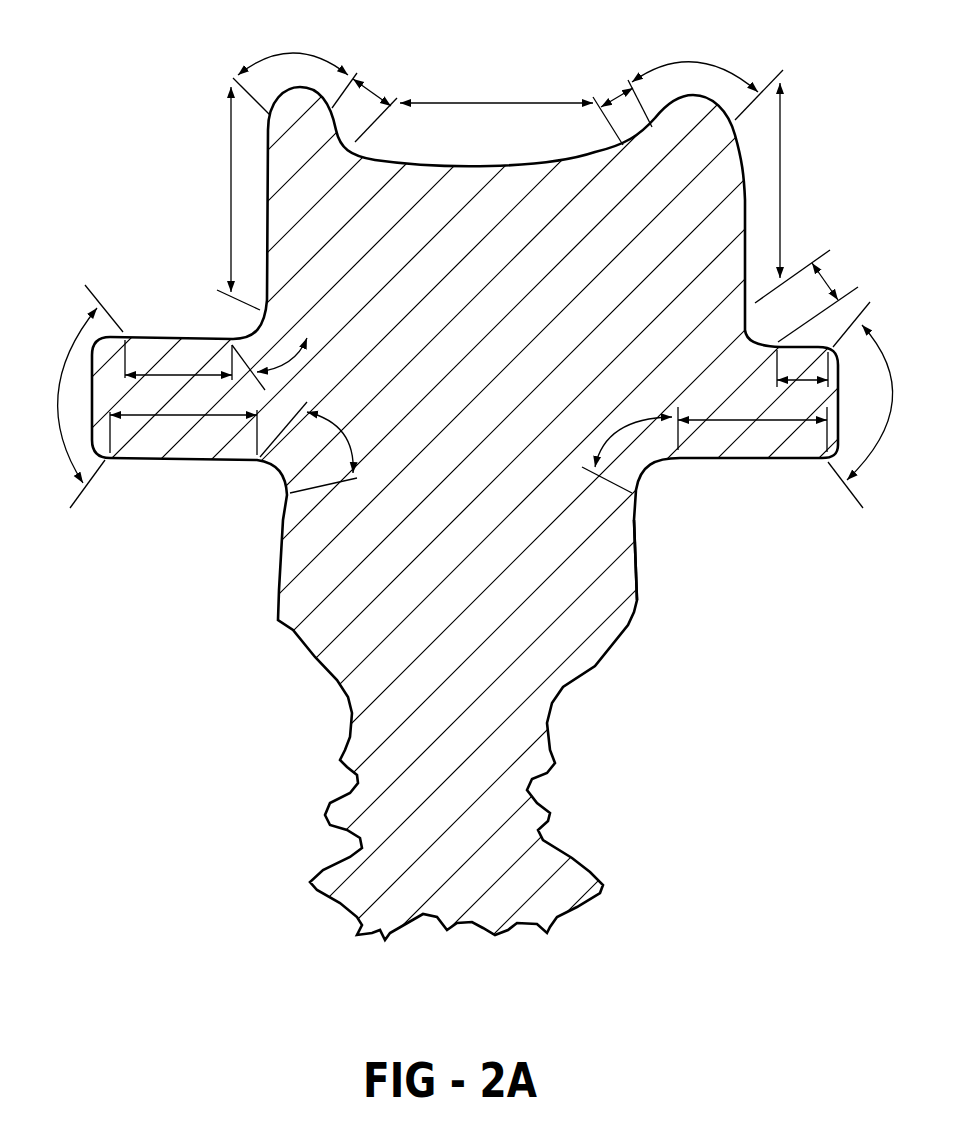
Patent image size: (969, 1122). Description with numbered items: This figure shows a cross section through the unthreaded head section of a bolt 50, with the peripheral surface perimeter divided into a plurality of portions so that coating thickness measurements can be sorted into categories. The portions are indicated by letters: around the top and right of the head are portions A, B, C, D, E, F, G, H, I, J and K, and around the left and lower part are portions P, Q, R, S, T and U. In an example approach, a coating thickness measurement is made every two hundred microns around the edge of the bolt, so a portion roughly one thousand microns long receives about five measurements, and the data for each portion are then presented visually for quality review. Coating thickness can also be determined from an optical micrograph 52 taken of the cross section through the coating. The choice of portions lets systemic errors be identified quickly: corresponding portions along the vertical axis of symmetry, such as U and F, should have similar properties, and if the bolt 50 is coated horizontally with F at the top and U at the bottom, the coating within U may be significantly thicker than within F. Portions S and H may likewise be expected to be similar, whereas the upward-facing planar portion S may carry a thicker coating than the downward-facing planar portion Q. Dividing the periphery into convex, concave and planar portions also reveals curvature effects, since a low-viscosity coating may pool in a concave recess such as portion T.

The bolt 50 is at (477, 366).
The optical micrograph 52 is at (637, 558).
The surface periphery portion A is at (295, 70).
The surface periphery portion B is at (375, 103).
The surface periphery portion C is at (496, 86).
The surface periphery portion D is at (622, 101).
The surface periphery portion E is at (707, 75).
The surface periphery portion F is at (792, 193).
The surface periphery portion G is at (818, 296).
The surface periphery portion H is at (802, 368).
The surface periphery portion I is at (868, 405).
The surface periphery portion J is at (752, 429).
The surface periphery portion K is at (627, 447).
The surface periphery portion P is at (313, 447).
The surface periphery portion Q is at (183, 432).
The surface periphery portion R is at (76, 396).
The surface periphery portion S is at (178, 360).
The surface periphery portion T is at (269, 364).
The surface periphery portion U is at (231, 198).